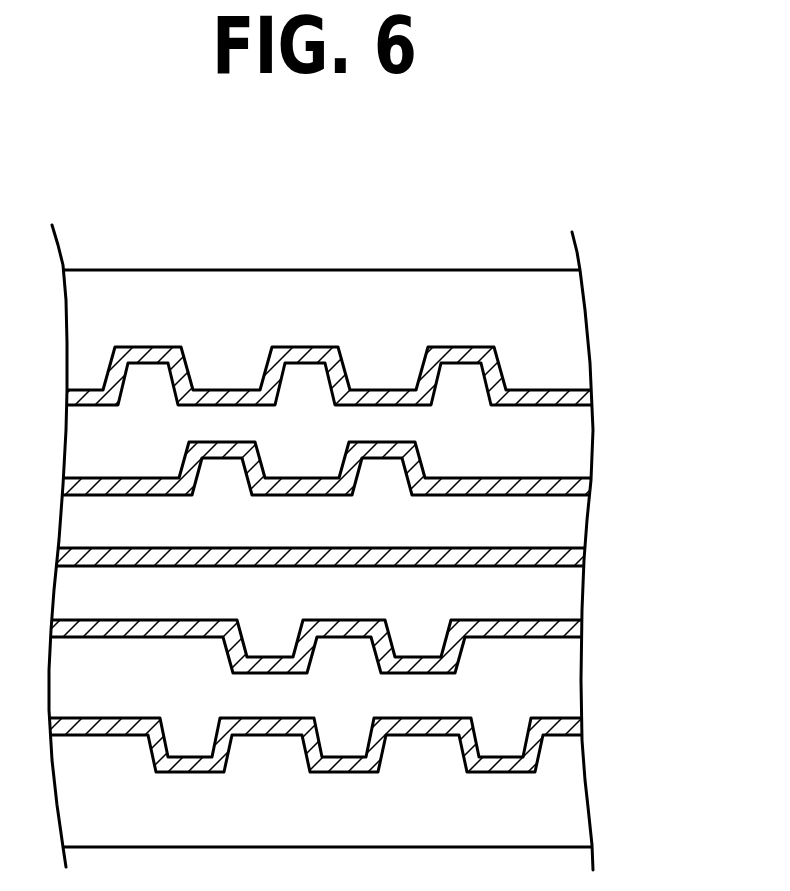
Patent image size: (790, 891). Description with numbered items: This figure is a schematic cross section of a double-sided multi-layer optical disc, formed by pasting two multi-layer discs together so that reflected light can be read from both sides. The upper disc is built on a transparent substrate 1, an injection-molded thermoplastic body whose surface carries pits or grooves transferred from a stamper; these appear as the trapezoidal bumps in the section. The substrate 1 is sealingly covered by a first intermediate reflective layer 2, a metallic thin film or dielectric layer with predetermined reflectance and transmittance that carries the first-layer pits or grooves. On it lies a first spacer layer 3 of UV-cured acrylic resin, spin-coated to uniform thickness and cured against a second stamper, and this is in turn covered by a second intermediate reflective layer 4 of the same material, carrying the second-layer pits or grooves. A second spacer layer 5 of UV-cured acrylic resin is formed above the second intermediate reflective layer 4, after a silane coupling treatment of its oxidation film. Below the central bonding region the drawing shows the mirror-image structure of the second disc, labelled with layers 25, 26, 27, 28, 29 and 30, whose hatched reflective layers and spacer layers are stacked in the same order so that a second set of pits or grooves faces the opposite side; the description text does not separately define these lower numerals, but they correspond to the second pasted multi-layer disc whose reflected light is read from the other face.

The transparent substrate 1 is at (568, 295).
The first intermediate reflective layer 2 is at (573, 378).
The first spacer layer 3 is at (572, 432).
The second intermediate reflective layer 4 is at (572, 477).
The second spacer layer 5 is at (578, 517).
The intermediate conductive layer 25 is at (577, 574).
The third insulating layer 26 is at (565, 592).
The third conductive layer 27 is at (568, 640).
The fourth insulating layer 28 is at (560, 678).
The fourth conductive layer 29 is at (570, 743).
The bottom substrate layer 30 is at (578, 797).